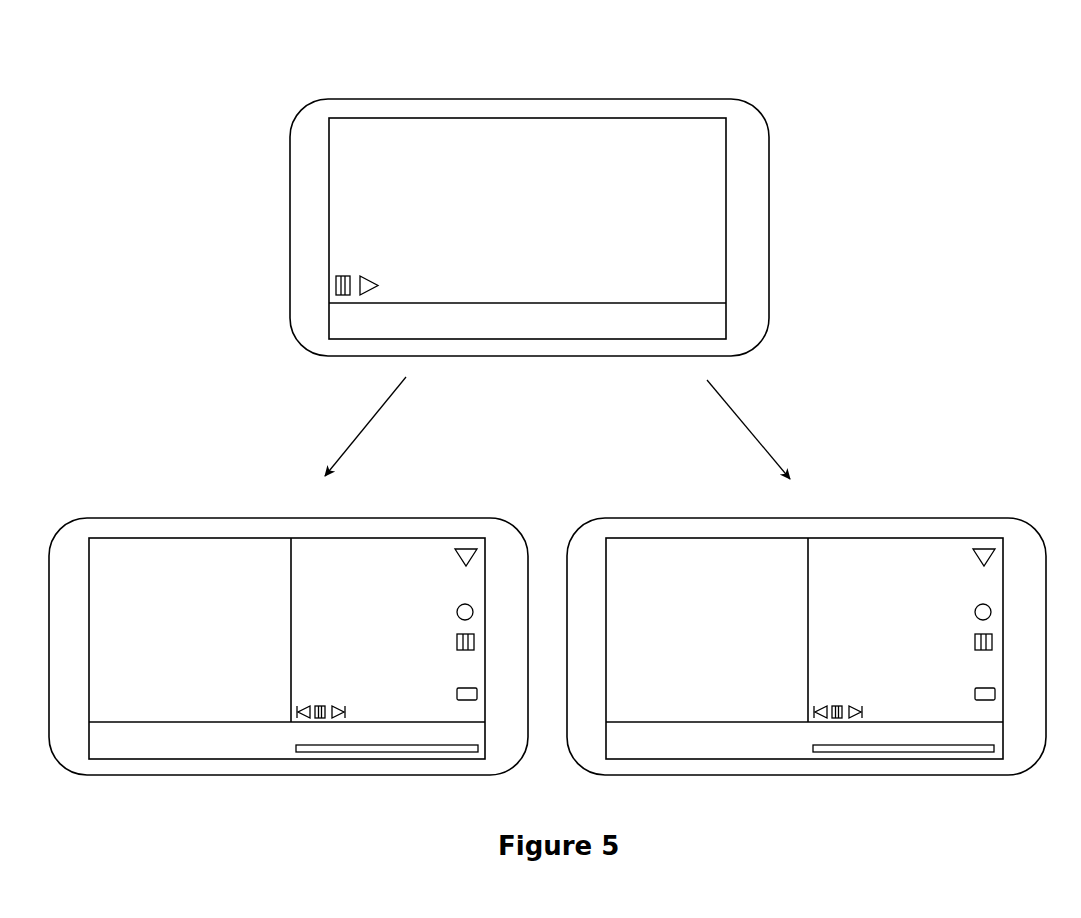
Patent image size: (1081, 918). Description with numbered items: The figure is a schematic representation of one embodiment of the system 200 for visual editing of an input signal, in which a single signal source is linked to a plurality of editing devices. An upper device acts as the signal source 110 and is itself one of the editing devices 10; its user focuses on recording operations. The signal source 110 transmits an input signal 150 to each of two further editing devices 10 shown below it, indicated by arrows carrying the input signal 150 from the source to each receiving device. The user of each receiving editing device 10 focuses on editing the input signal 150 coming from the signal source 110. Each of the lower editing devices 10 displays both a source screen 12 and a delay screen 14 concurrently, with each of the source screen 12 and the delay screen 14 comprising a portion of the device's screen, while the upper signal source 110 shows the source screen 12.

The system for visual editing of an input signal 200 is at (617, 191).
The signal source 110 is at (773, 178).
The source screen 12 is at (562, 130).
The delay screen 14 is at (405, 558).
The editing device 10 is at (452, 517).
The input signal 150 is at (558, 428).